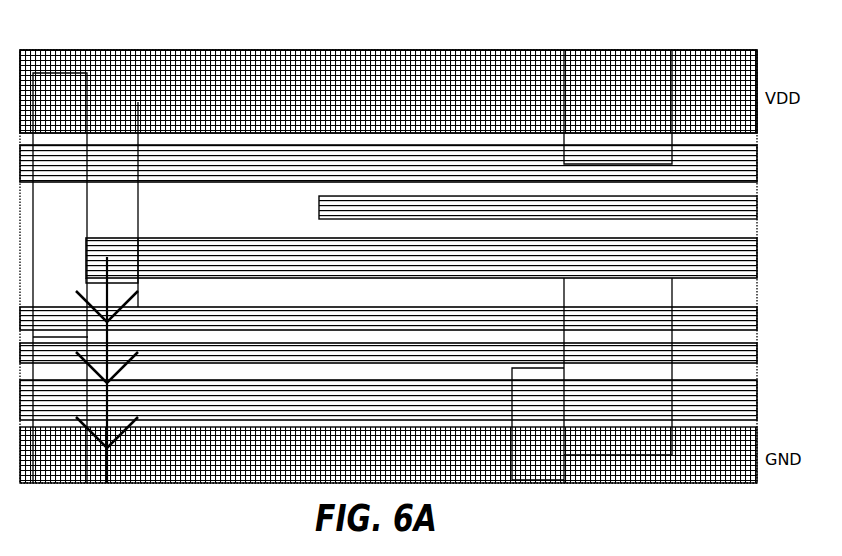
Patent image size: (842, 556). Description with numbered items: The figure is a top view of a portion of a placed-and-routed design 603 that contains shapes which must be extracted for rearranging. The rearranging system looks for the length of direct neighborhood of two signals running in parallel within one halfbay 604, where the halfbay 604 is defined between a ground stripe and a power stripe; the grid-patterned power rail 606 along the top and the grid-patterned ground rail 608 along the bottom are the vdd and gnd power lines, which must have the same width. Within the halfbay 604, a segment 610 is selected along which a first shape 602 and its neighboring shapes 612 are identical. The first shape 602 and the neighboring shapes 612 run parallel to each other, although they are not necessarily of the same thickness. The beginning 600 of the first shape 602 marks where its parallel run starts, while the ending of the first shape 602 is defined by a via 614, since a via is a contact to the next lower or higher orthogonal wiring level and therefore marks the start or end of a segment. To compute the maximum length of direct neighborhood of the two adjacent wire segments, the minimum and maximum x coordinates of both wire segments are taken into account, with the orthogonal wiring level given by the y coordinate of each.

The beginning of first shape 600 is at (106, 222).
The first shape 602 is at (247, 237).
The placed-and-routed design 603 is at (66, 42).
The halfbay 604 is at (240, 51).
The power rail metal layer 606 is at (335, 49).
The GND power rail 608 is at (270, 478).
The segment 610 is at (557, 46).
The neighboring shapes 612 is at (750, 303).
The via 614 is at (119, 237).